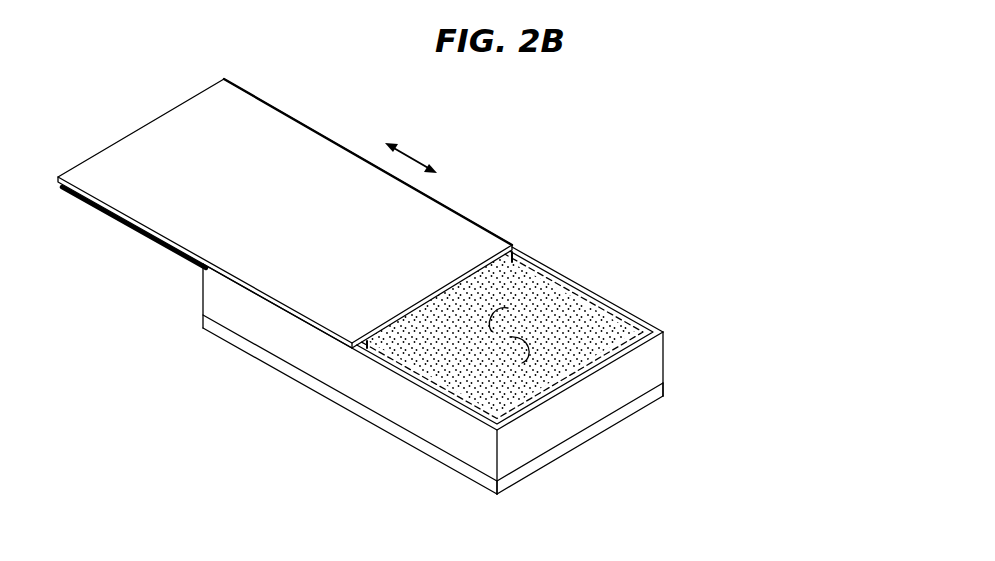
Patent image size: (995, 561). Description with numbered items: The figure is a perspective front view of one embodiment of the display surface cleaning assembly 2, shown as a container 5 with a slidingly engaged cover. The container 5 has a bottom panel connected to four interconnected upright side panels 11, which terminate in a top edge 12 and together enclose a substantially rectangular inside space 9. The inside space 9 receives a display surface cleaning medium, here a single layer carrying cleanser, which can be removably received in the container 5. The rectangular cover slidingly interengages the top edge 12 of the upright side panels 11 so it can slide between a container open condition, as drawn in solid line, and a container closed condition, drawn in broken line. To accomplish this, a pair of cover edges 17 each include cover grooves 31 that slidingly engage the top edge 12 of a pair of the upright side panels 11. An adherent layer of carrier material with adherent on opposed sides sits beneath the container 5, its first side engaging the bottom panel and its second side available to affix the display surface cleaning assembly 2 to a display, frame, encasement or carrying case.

The display surface cleaning assembly 2 is at (690, 361).
The container 5 is at (480, 448).
The inside space 9 is at (509, 335).
The upright side panels 11 is at (423, 413).
The top edge 12 is at (661, 332).
The cover edges 17 is at (353, 150).
The cover grooves 31 is at (377, 347).